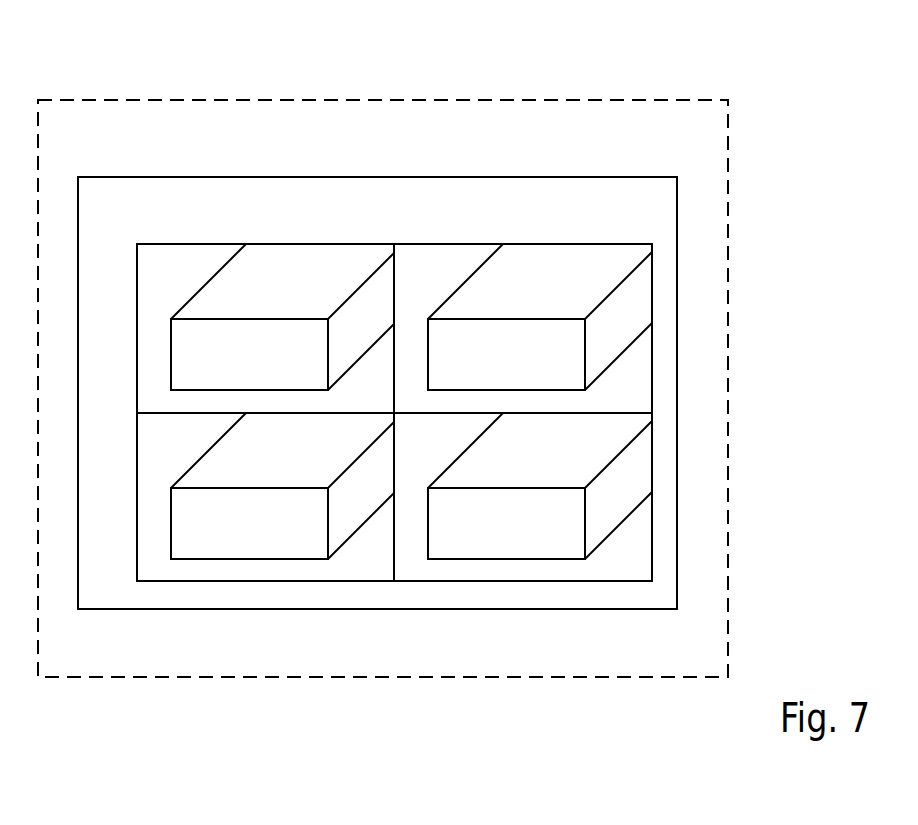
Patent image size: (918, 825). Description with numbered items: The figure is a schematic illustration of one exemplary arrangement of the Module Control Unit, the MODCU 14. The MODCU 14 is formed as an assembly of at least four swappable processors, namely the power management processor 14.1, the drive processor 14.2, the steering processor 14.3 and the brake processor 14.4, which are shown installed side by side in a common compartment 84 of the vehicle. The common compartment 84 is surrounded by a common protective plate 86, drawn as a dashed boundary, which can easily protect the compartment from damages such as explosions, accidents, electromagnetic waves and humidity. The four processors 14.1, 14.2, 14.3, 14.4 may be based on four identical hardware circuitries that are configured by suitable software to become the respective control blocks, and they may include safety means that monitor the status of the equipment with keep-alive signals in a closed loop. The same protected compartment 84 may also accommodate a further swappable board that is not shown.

The Module Control Unit MODCU 14 is at (421, 244).
The PMU processor 14.1 is at (265, 305).
The DRV processor 14.2 is at (522, 305).
The STR processor 14.3 is at (265, 474).
The BRK processor 14.4 is at (522, 474).
The common compartment 84 is at (507, 178).
The common protective plate 86 is at (728, 231).